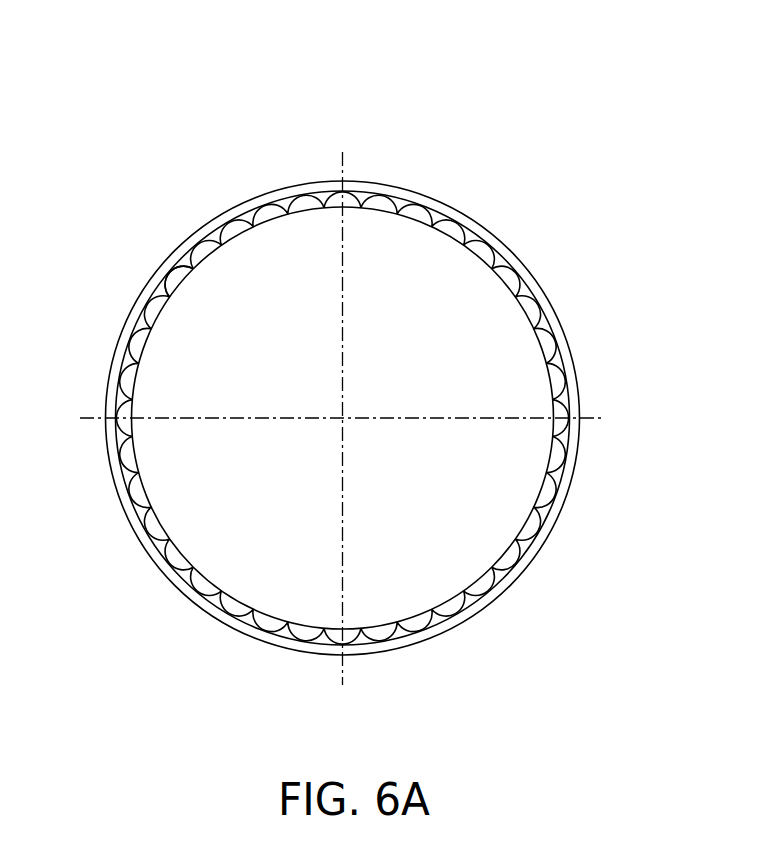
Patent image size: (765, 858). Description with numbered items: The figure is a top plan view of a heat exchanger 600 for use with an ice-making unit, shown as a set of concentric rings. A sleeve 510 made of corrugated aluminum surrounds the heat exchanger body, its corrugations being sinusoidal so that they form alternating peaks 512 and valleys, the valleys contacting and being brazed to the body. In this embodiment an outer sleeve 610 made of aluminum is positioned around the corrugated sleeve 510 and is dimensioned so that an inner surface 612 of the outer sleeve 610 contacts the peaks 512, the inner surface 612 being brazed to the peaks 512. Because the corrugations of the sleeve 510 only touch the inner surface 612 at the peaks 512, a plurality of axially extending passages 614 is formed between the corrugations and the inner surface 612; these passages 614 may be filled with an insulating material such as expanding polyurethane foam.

The heat exchanger 600 is at (333, 348).
The sleeve 510 is at (437, 196).
The inner surface 612 is at (288, 212).
The outer sleeve 610 is at (173, 262).
The peaks 512 is at (267, 207).
The axially extending passages 614 is at (162, 292).